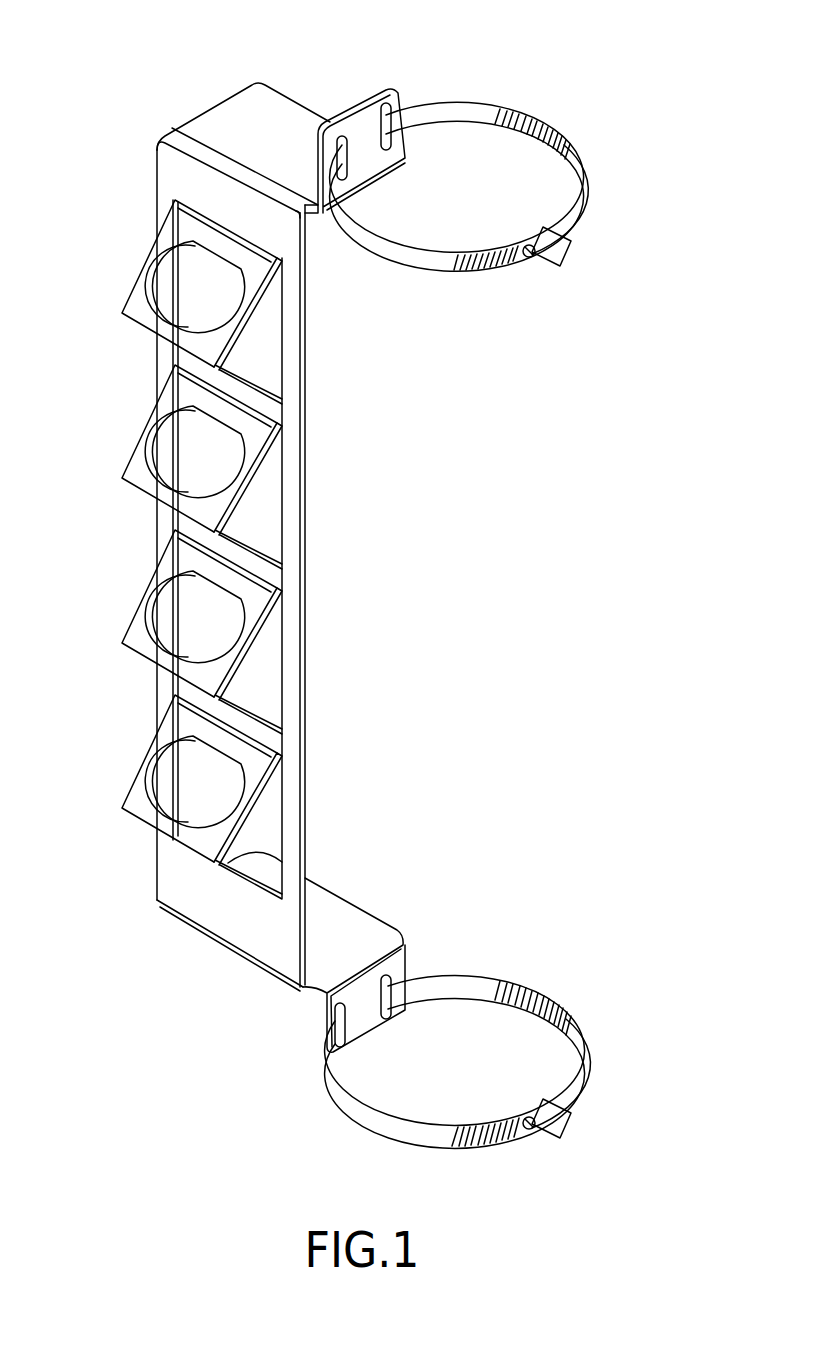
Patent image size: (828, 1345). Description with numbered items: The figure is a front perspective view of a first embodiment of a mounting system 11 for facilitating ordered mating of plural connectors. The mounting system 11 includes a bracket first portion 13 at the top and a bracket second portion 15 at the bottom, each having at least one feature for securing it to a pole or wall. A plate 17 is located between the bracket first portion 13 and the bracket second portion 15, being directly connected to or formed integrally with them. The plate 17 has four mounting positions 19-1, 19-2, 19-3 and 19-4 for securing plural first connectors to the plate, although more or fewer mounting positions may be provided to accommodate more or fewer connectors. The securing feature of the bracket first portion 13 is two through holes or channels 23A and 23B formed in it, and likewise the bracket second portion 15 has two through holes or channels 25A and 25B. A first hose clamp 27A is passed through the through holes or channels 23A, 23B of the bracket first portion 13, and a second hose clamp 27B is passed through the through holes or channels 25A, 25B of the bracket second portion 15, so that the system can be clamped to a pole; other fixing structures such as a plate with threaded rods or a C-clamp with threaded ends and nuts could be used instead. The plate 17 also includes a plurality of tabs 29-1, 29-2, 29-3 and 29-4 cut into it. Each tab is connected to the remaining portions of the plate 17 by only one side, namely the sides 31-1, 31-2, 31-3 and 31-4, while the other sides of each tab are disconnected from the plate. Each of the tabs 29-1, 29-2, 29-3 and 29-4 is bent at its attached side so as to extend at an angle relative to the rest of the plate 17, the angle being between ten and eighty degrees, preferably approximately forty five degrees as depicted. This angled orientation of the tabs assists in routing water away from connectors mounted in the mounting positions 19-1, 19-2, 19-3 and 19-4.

The mounting system 11 is at (645, 199).
The bracket first portion 13 is at (246, 108).
The bracket second portion 15 is at (362, 930).
The plate 17 is at (165, 176).
The mounting position 19-1 is at (160, 270).
The mounting position 19-2 is at (160, 436).
The mounting position 19-3 is at (160, 601).
The mounting position 19-4 is at (160, 765).
The through hole or channel 23A is at (345, 168).
The through hole or channel 23B is at (392, 140).
The through hole or channel 25A is at (345, 1039).
The through hole or channel 25B is at (390, 1009).
The first hose clamp 27A is at (470, 101).
The second hose clamp 27B is at (485, 976).
The tab 29-1 is at (136, 317).
The tab 29-2 is at (136, 482).
The tab 29-3 is at (136, 647).
The tab 29-4 is at (136, 812).
The side of tab 31-1 is at (255, 240).
The side of tab 31-2 is at (255, 405).
The side of tab 31-3 is at (255, 570).
The side of tab 31-4 is at (255, 735).